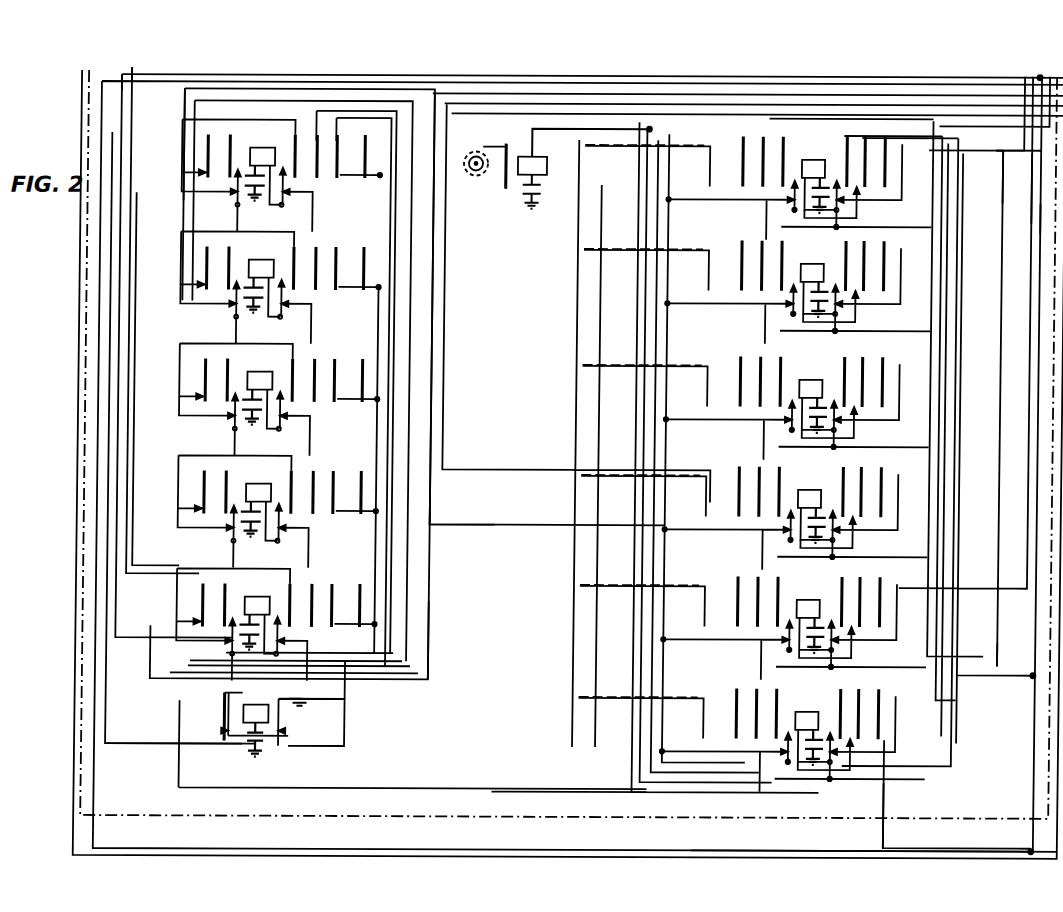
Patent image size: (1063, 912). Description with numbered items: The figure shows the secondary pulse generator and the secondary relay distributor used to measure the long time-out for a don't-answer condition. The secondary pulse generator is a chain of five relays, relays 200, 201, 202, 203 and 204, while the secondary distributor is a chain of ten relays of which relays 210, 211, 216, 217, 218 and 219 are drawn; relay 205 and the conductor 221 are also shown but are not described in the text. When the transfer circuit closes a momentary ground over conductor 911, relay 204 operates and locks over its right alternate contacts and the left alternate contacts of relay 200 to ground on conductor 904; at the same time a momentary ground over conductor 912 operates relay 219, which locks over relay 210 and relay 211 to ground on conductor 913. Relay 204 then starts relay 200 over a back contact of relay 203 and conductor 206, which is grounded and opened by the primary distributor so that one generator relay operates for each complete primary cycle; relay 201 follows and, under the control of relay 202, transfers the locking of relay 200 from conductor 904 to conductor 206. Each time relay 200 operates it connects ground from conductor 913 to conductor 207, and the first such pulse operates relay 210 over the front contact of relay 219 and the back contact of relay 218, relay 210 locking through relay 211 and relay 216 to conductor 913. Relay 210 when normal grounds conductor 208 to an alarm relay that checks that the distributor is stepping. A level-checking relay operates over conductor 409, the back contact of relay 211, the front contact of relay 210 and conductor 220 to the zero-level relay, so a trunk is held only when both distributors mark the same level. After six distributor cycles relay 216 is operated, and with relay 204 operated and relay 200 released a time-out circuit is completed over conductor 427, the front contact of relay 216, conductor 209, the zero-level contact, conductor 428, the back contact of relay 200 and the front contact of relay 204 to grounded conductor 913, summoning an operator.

The relay 200 is at (256, 600).
The relay 201 is at (278, 476).
The relay 202 is at (278, 364).
The relay 203 is at (278, 252).
The relay 204 is at (278, 140).
The memory cell stage 205 is at (272, 699).
The conductor 206 is at (132, 95).
The conductor 207 is at (596, 790).
The conductor 208 is at (892, 804).
The conductor 209 is at (452, 525).
The relay 210 is at (826, 703).
The relay 211 is at (826, 591).
The relay 216 is at (826, 481).
The relay 217 is at (826, 371).
The relay 218 is at (826, 255).
The relay 219 is at (826, 151).
The conductor 220 is at (964, 735).
The line 221 is at (968, 668).
The conductor 409 is at (970, 160).
The conductor 427 is at (447, 262).
The conductor 428 is at (435, 636).
The conductor 904 is at (122, 113).
The conductor 911 is at (185, 162).
The conductor 912 is at (935, 192).
The conductor 913 is at (824, 840).